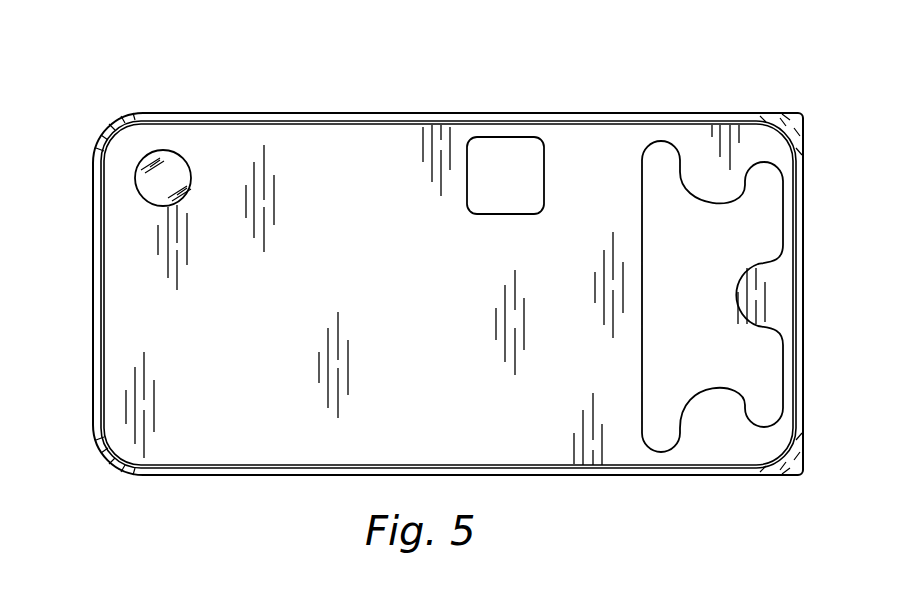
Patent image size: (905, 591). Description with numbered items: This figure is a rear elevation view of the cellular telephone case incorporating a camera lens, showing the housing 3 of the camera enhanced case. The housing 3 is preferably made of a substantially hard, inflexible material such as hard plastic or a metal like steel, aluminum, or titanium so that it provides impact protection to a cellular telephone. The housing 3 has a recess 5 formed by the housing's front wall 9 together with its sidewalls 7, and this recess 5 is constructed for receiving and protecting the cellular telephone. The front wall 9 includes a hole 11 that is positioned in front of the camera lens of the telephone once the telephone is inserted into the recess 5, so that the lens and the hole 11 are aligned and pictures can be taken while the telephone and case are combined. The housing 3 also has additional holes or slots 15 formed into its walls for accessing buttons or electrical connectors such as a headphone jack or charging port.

The housing 3 is at (680, 70).
The recess 5 is at (382, 149).
The sidewalls 7 is at (96, 330).
The front wall 9 is at (338, 274).
The hole 11 is at (172, 165).
The holes or slots 15 is at (508, 167).